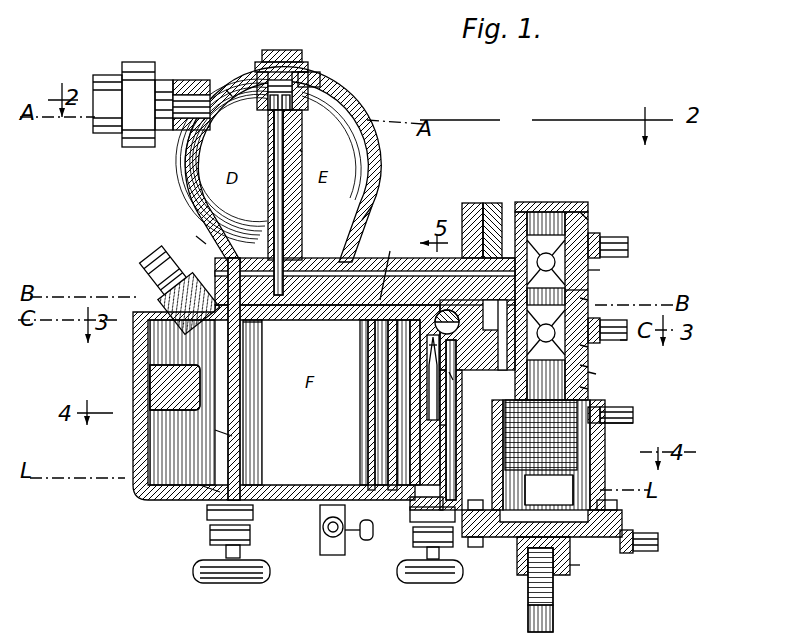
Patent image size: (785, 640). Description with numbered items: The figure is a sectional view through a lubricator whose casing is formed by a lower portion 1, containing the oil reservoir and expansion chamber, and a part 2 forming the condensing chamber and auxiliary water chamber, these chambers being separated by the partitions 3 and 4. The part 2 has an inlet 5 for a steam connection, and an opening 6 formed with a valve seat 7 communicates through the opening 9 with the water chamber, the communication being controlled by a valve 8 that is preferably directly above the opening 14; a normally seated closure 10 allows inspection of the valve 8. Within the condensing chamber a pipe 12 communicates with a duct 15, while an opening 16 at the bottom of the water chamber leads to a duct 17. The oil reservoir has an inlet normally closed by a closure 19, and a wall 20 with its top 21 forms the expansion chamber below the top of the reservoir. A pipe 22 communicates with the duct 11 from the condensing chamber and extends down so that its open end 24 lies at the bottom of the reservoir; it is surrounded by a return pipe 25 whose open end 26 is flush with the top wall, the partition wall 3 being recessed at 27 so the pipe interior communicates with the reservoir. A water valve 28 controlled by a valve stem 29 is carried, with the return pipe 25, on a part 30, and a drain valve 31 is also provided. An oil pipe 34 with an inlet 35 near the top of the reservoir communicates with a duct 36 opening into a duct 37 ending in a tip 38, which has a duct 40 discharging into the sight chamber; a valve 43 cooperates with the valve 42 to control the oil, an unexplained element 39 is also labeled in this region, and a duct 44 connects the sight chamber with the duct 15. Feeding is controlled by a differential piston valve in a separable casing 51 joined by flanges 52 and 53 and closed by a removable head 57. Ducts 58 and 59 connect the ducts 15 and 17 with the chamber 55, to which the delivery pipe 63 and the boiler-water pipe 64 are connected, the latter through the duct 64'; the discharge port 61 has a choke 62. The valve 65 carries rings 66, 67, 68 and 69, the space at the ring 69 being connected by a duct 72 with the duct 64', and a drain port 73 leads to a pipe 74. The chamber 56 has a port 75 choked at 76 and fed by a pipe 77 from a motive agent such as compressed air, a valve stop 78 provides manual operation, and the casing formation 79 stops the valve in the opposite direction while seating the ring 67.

The lower portion of casing 1 is at (131, 368).
The casing part 2 is at (375, 167).
The partition 3 is at (198, 218).
The partition 4 is at (342, 120).
The inlet 5 is at (186, 80).
The opening 6 is at (230, 92).
The valve seat 7 is at (256, 84).
The valve 8 is at (310, 80).
The opening 9 is at (316, 74).
The closure 10 is at (284, 50).
The duct or passage 11 is at (197, 240).
The pipe 12 is at (372, 108).
The opening 14 is at (206, 108).
The duct or passage 15 is at (390, 264).
The opening 16 is at (373, 210).
The duct or passage 17 is at (365, 258).
The closure 19 is at (143, 278).
The wall 20 is at (195, 412).
The top of wall 21 is at (135, 397).
The pipe 22 is at (240, 378).
The open end of pipe 24 is at (202, 490).
The return pipe 25 is at (222, 437).
The open end of return pipe 26 is at (258, 328).
The recess 27 is at (200, 281).
The water valve 28 is at (202, 512).
The valve stem 29 is at (227, 551).
The part 30 is at (255, 512).
The drain valve 31 is at (338, 550).
The oil pipe 34 is at (374, 410).
The inlet 35 is at (362, 328).
The duct 36 is at (397, 488).
The duct 37 is at (457, 464).
The tip 38 is at (426, 352).
The valve seat 39 is at (423, 338).
The duct 40 is at (462, 377).
The valve 42 is at (461, 385).
The valve 43 is at (446, 424).
The duct 44 is at (432, 316).
The casing 51 is at (594, 292).
The flange 52 is at (486, 192).
The flange 53 is at (498, 204).
The chamber 55 is at (589, 303).
The chamber 56 is at (597, 484).
The removable head 57 is at (574, 565).
The duct or passage-way 58 is at (520, 210).
The duct or passage-way 59 is at (507, 257).
The discharge port 61 is at (586, 345).
The choke 62 is at (592, 309).
The delivery pipe 63 is at (624, 338).
The pipe 64 is at (623, 235).
The duct 64' is at (611, 228).
The valve 65 is at (588, 388).
The ring 66 is at (597, 455).
The ring 67 is at (598, 373).
The ring 68 is at (602, 277).
The ring 69 is at (555, 203).
The duct 72 is at (590, 210).
The drain port 73 is at (630, 421).
The pipe 74 is at (630, 413).
The port 75 is at (596, 563).
The choke 76 is at (612, 516).
The pipe 77 is at (658, 547).
The valve stop 78 is at (523, 560).
The casing stop 79 is at (590, 368).